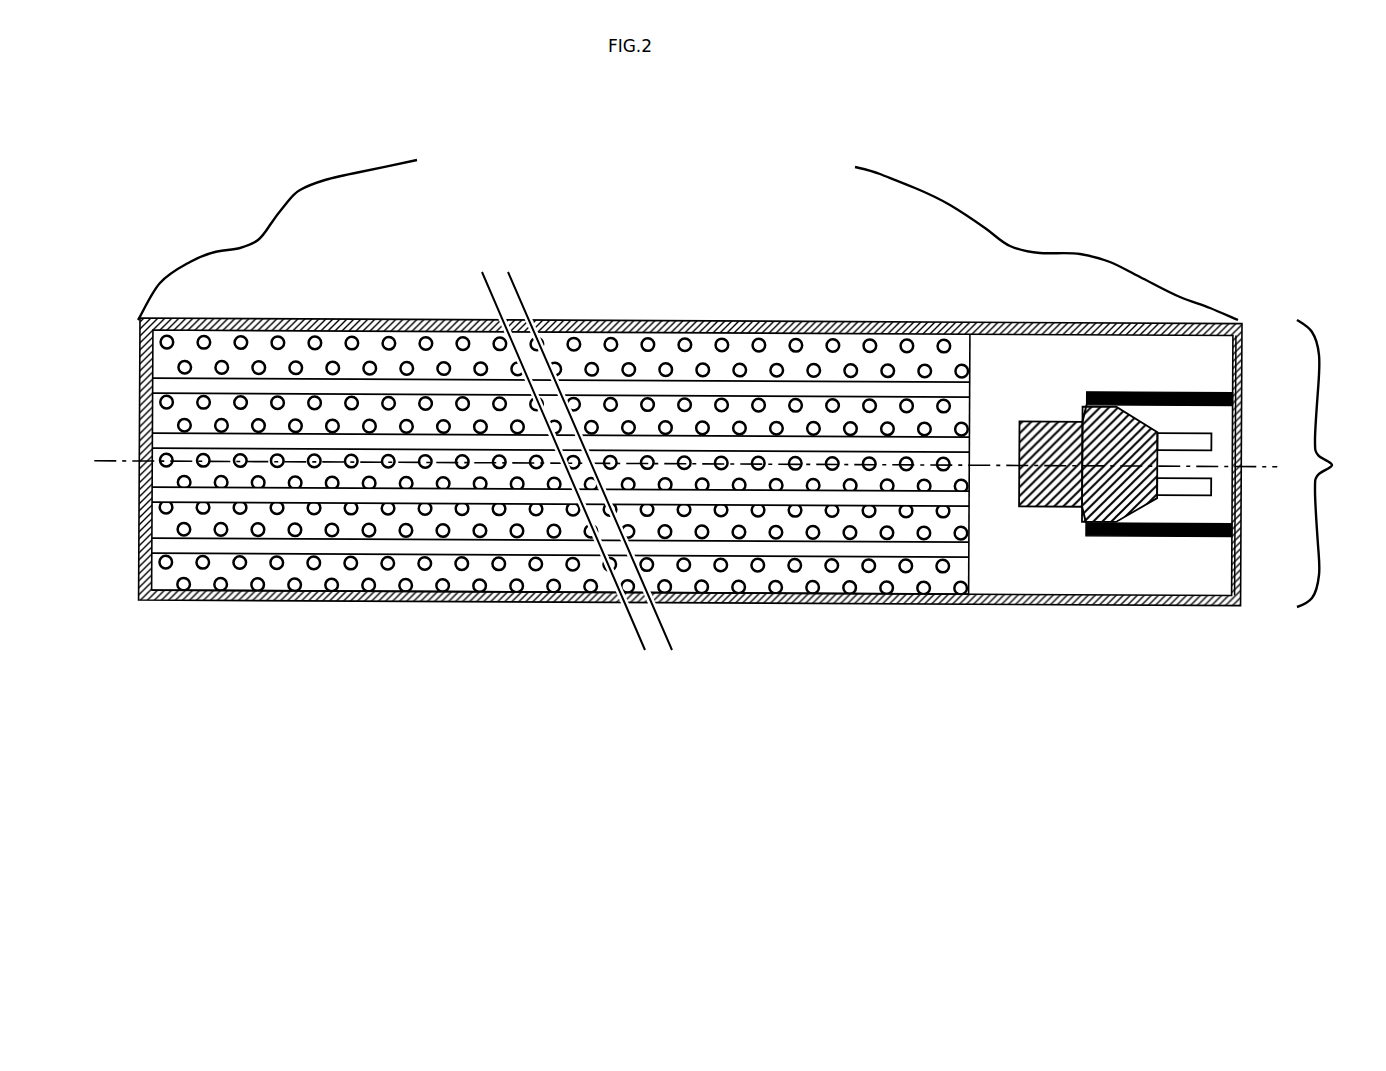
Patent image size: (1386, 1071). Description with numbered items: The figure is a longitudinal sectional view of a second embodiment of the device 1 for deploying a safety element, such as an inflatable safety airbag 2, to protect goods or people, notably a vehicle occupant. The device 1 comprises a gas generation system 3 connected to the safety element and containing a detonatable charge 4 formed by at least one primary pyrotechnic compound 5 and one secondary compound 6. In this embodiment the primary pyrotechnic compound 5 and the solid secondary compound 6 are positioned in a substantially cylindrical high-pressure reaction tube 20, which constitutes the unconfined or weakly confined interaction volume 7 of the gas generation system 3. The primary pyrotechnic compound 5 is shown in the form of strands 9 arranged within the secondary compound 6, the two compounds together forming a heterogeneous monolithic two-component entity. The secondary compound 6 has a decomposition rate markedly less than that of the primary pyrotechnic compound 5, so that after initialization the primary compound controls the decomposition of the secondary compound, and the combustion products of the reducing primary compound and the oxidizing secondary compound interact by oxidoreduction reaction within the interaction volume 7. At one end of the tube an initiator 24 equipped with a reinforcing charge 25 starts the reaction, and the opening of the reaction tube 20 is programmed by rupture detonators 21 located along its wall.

The device 1 is at (660, 250).
The inflatable safety airbag 2 is at (1037, 246).
The gas generation system 3 is at (958, 628).
The detonatable charge 4 is at (135, 770).
The primary pyrotechnic compound 5 is at (578, 415).
The secondary compound 6 is at (578, 414).
The interaction volume 7 is at (1328, 463).
The strand 9 is at (578, 522).
The reaction tube 20 is at (578, 574).
The rupture detonators 21 is at (560, 592).
The initiator 24 is at (1108, 490).
The reinforcing charge 25 is at (1187, 560).